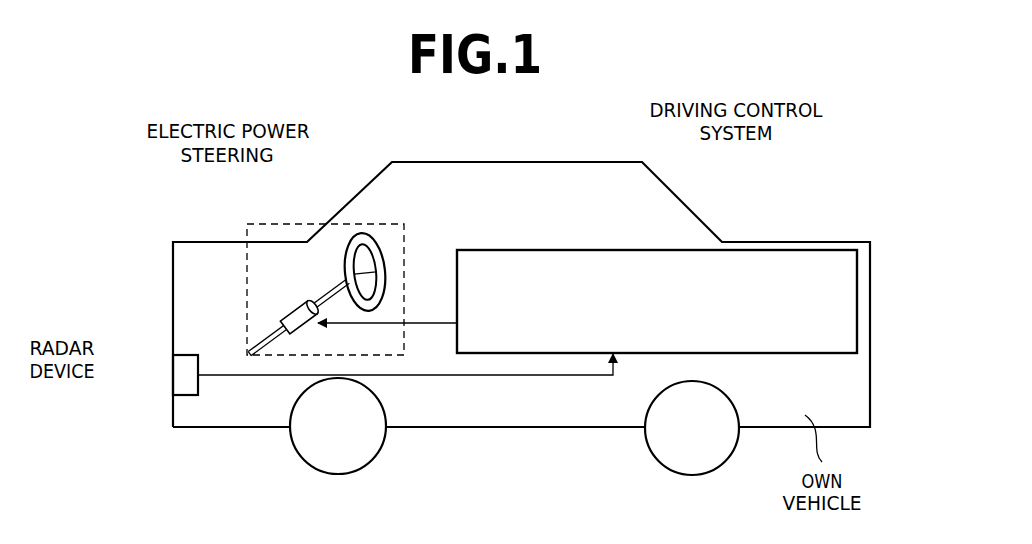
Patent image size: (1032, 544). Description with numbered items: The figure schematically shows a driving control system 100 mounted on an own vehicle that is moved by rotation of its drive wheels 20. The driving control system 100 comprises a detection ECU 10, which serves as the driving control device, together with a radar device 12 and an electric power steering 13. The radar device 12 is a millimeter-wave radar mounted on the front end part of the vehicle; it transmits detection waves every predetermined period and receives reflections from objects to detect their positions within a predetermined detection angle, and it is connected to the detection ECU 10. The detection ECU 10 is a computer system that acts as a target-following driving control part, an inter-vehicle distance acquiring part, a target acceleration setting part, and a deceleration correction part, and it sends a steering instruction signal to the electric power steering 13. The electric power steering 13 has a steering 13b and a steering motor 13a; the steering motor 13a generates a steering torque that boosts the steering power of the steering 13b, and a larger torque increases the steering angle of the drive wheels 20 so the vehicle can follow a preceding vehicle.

The detection ECU 10 is at (607, 249).
The radar device 12 is at (182, 370).
The electric power steering 13 is at (267, 215).
The steering motor 13a is at (298, 306).
The steering 13b is at (353, 247).
The drive wheels 20 is at (372, 458).
The driving control system 100 is at (698, 200).